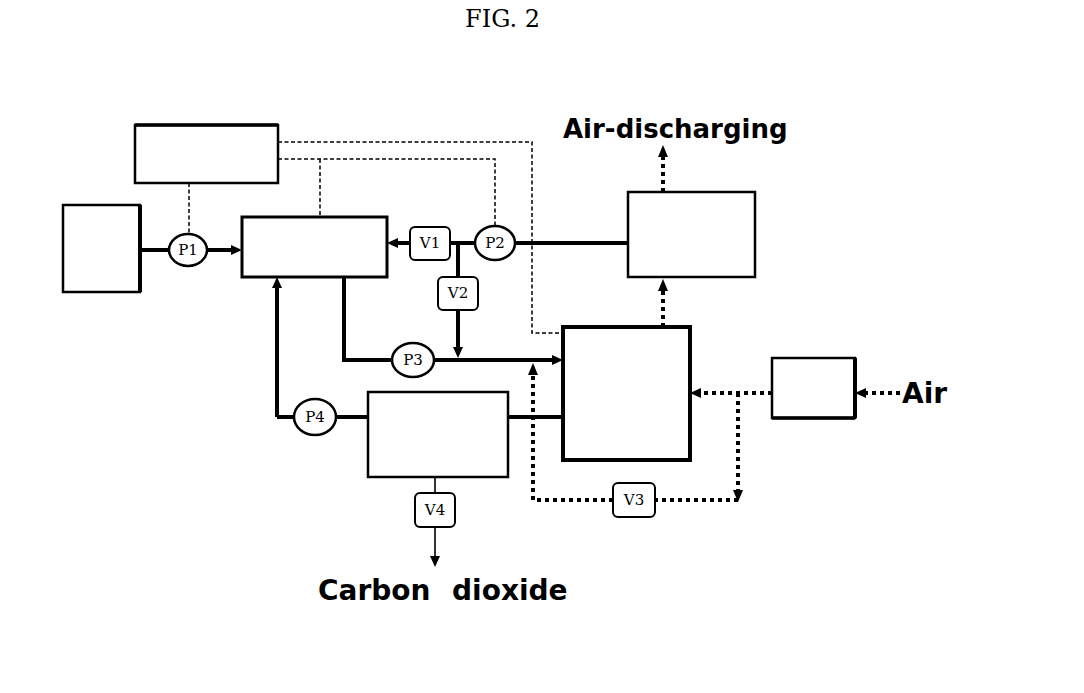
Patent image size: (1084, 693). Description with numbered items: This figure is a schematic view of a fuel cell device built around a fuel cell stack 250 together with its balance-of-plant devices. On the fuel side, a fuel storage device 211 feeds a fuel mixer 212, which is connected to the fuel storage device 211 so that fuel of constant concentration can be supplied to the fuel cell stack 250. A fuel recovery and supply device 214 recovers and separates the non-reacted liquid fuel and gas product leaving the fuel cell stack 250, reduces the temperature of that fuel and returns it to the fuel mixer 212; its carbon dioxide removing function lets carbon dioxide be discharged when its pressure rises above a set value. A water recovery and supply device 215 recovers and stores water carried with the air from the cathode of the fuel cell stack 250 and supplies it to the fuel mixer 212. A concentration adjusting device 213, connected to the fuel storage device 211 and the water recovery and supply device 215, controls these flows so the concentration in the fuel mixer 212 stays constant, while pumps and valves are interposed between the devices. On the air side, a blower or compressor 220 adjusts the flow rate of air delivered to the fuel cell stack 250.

The fuel storage device 211 is at (93, 293).
The fuel mixer 212 is at (250, 278).
The concentration adjusting device 213 is at (218, 124).
The fuel recovery and supply device 214 is at (385, 477).
The water recovery and supply device 215 is at (755, 227).
The blower or compressor 220 is at (812, 420).
The fuel cell stack 250 is at (692, 340).